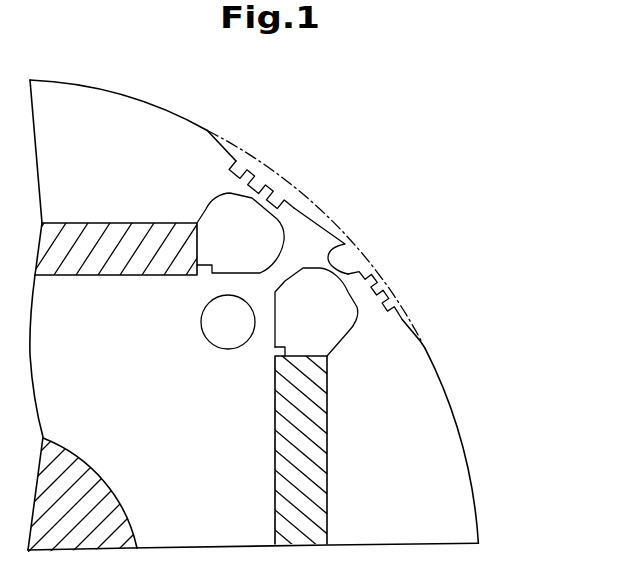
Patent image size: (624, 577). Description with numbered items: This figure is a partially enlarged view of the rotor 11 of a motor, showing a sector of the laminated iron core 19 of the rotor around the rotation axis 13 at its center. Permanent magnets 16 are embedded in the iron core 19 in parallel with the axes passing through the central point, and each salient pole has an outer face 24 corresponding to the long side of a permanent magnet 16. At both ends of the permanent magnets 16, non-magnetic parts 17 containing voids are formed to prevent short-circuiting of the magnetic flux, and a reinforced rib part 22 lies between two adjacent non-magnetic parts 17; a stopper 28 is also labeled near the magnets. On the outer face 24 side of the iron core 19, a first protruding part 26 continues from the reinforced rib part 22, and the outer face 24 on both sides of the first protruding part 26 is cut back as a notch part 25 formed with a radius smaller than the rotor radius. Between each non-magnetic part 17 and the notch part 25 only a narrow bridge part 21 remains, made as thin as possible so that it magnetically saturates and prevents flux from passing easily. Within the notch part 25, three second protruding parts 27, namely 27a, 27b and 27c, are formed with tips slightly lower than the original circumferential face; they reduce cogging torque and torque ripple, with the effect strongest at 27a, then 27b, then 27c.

The rotor 11 is at (446, 466).
The rotation axis 13 is at (90, 493).
The permanent magnet 16 is at (130, 258).
The non-magnetic part 17 is at (213, 216).
The iron core of rotor 19 is at (438, 425).
The bridge part 21 is at (256, 199).
The reinforced rib part 22 is at (280, 270).
The outer face 24 is at (438, 373).
The notch part 25 is at (291, 220).
The first protruding part 26 is at (328, 226).
The second protruding part 27 is at (512, 240).
The second protruding part 27a is at (398, 315).
The second protruding part 27b is at (380, 297).
The second protruding part 27c is at (375, 270).
The stopper 28 is at (203, 271).